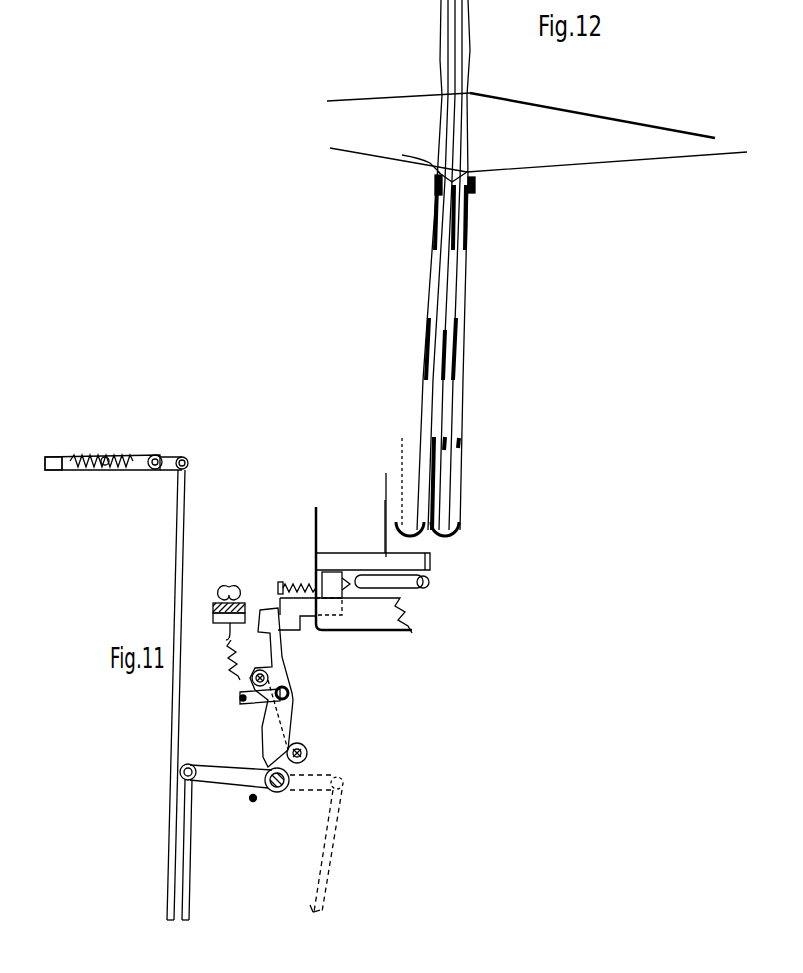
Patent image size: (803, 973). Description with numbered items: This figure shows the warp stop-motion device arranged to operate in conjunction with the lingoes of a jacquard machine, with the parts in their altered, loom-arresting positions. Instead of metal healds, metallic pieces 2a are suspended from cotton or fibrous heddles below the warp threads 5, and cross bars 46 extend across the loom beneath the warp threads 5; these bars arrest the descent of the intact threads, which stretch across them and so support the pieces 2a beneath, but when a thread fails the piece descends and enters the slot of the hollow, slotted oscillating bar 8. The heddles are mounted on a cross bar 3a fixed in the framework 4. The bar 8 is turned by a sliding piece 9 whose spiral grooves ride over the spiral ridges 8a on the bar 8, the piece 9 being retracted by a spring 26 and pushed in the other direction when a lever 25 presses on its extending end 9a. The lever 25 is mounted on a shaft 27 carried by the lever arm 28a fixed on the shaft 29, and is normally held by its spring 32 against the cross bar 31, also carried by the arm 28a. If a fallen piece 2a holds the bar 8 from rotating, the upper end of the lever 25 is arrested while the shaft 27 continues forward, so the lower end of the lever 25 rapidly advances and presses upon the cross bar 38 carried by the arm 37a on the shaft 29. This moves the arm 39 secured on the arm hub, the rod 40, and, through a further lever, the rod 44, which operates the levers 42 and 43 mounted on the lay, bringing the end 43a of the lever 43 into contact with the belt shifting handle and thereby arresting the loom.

In FIG. 12, the metallic pieces 2a is at (455, 328).
In FIG. 12, the warp threads 5 is at (517, 108).
In FIG. 12, the cross bars 46 is at (477, 188).
In FIG. 12, the vibrating or oscillating bar 8 is at (462, 538).
In FIG. 12, the cross bar 3a is at (430, 563).
In FIG. 12, the sliding piece 9 is at (330, 578).
In FIG. 12, the spiral ridges 8a is at (350, 580).
In FIG. 12, the springs 26 is at (300, 583).
In FIG. 12, the framework 4 is at (393, 607).
In FIG. 11, the extending ends 9a is at (288, 632).
In FIG. 11, the lever 43 is at (87, 450).
In FIG. 11, the end of the lever 43a is at (57, 462).
In FIG. 11, the lever 42 is at (168, 460).
In FIG. 11, the rod 44 is at (178, 712).
In FIG. 11, the rod 40 is at (185, 850).
In FIG. 11, the arm 39 is at (218, 773).
In FIG. 11, the shaft 29 is at (275, 793).
In FIG. 11, the arm 37a is at (308, 758).
In FIG. 11, the cross bar 38 is at (298, 748).
In FIG. 11, the lever 25 is at (277, 665).
In FIG. 11, the lever arm 28a is at (262, 738).
In FIG. 11, the cross bar 31 is at (258, 672).
In FIG. 11, the shaft 27 is at (290, 695).
In FIG. 11, the springs 32 is at (247, 665).